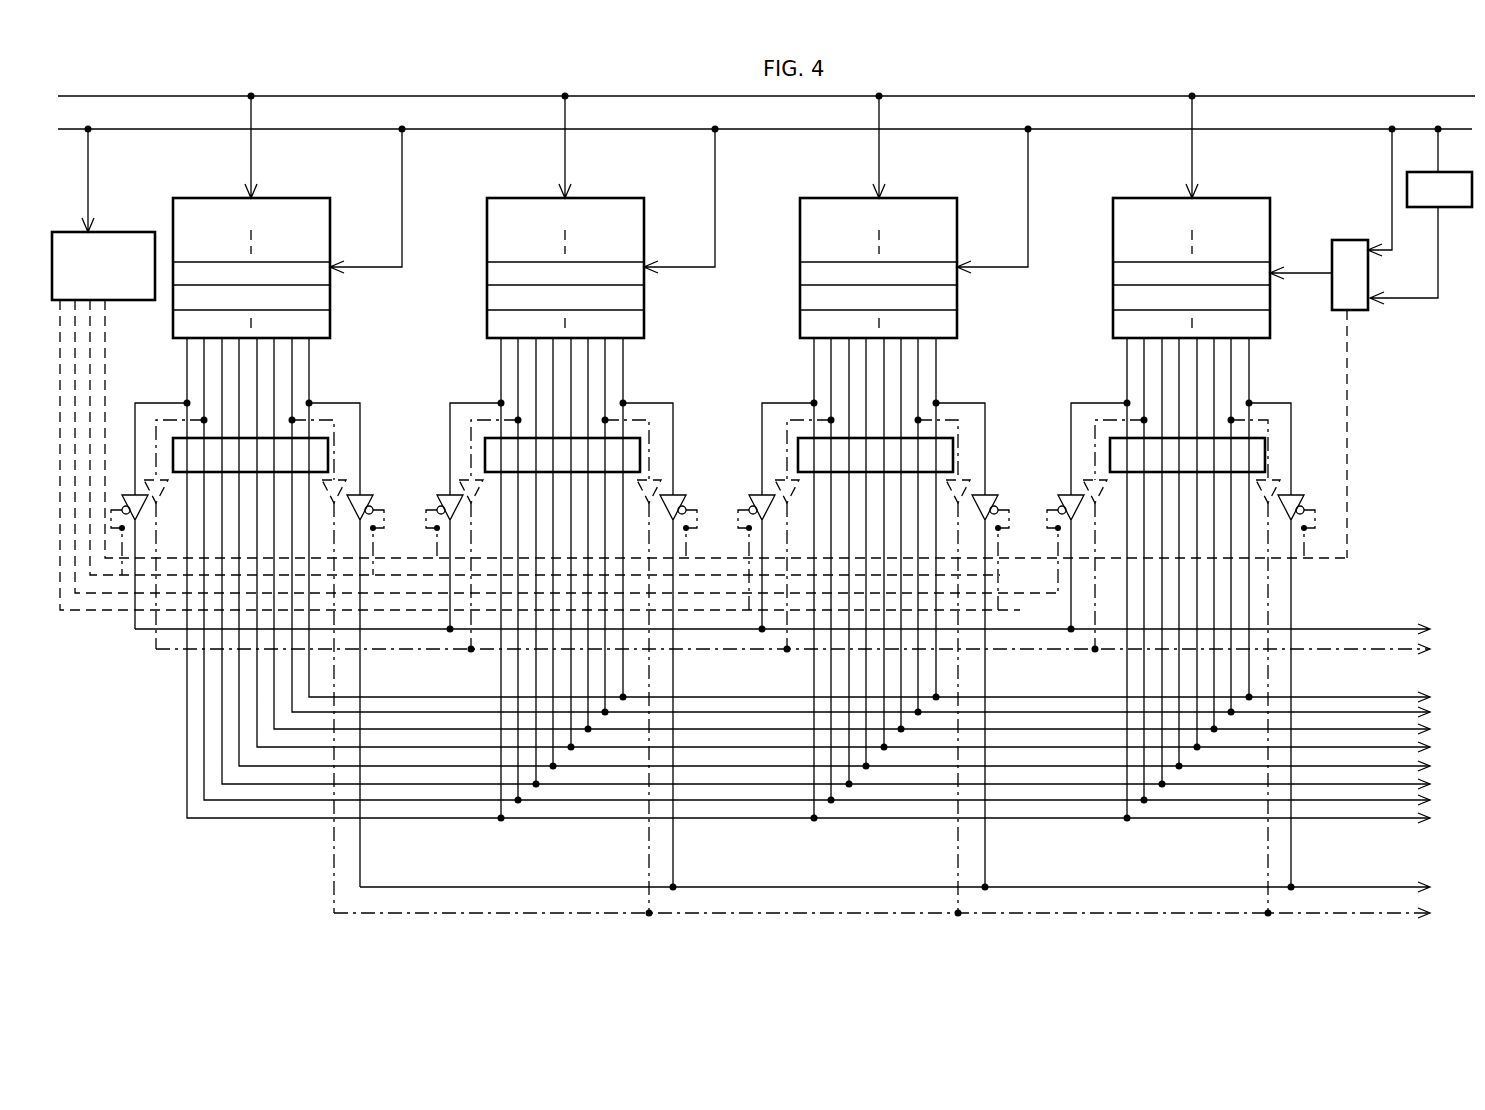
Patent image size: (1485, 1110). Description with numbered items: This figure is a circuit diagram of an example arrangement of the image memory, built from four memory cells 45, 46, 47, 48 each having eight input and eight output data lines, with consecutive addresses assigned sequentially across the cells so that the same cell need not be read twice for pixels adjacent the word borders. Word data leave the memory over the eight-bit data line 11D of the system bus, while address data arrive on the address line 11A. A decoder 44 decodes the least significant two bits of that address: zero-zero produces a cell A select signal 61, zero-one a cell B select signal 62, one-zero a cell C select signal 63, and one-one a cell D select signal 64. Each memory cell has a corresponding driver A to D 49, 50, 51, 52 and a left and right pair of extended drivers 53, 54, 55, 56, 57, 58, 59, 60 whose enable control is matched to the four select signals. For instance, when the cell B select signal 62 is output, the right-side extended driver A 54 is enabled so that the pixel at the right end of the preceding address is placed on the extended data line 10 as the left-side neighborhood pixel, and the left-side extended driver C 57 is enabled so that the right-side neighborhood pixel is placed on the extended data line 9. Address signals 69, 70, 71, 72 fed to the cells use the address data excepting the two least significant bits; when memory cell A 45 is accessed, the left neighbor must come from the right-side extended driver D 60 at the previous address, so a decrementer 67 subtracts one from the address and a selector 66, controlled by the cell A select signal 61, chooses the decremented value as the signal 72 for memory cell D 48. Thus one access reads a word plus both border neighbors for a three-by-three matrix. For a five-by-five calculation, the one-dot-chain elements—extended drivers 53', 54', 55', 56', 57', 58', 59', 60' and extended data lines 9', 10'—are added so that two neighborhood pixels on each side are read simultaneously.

The extended data line 9 is at (782, 606).
The extended data line 9' is at (793, 616).
The extended data line 10 is at (895, 865).
The extended data line 10' is at (882, 878).
The address line 11A is at (453, 130).
The data line 11D is at (406, 96).
The decoder 44 is at (103, 228).
The memory cell A 45 is at (288, 198).
The memory cell B 46 is at (584, 198).
The memory cell C 47 is at (900, 198).
The memory cell D 48 is at (1202, 198).
The driver A 49 is at (313, 437).
The driver B 50 is at (626, 437).
The driver C 51 is at (938, 437).
The driver D 52 is at (1246, 437).
The left-side extended driver A 53 is at (147, 515).
The left-side extended driver 53' is at (155, 531).
The right-side extended driver A 54 is at (347, 644).
The right-side extended driver 54' is at (342, 665).
The left-side extended driver B 55 is at (454, 515).
The left-side extended driver 55' is at (465, 533).
The right-side extended driver B 56 is at (661, 644).
The right-side extended driver 56' is at (655, 665).
The left-side extended driver C 57 is at (767, 515).
The left-side extended driver 57' is at (776, 533).
The right-side extended driver C 58 is at (974, 644).
The right-side extended driver 58' is at (969, 665).
The left-side extended driver D 59 is at (1080, 515).
The left-side extended driver 59' is at (1090, 533).
The right-side extended driver D 60 is at (1285, 644).
The right-side extended driver 60' is at (1280, 665).
The cell A select signal 61 is at (105, 325).
The cell B select signal 62 is at (92, 366).
The cell C select signal 63 is at (77, 396).
The cell D select signal 64 is at (78, 612).
The selector 66 is at (1343, 313).
The decrementer 67 is at (1417, 208).
The address signal 69 is at (367, 270).
The address signal 70 is at (677, 270).
The address signal 71 is at (987, 270).
The address signal 72 is at (1287, 277).